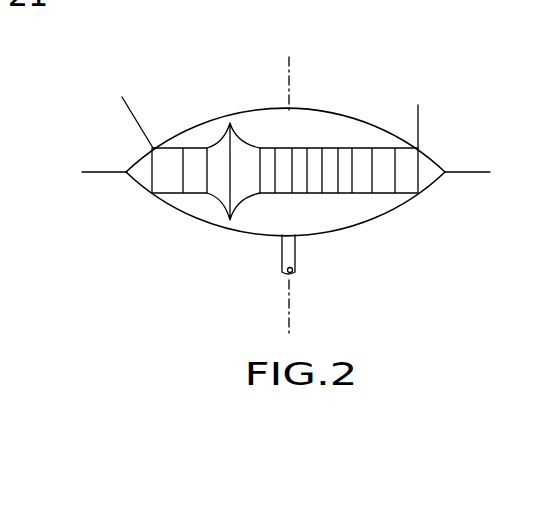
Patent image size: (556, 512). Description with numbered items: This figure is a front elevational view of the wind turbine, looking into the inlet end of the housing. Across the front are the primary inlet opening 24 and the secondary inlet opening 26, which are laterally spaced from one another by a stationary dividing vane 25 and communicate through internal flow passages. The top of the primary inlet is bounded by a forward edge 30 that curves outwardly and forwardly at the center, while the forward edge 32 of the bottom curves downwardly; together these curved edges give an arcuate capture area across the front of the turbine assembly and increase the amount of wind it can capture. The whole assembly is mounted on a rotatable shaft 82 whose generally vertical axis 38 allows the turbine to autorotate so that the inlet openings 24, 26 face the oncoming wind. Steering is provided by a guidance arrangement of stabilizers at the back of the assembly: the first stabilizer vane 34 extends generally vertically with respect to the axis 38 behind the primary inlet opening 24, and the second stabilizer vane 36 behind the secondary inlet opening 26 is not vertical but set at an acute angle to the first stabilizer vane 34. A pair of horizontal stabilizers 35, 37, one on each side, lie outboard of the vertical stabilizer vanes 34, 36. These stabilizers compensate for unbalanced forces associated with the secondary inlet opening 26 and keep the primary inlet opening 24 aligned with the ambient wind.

The primary inlet opening 24 is at (360, 177).
The stationary dividing vane 25 is at (240, 157).
The secondary inlet opening 26 is at (165, 182).
The forward edge of the primary inlet opening 30 is at (325, 108).
The forward edge of the bottom 32 is at (258, 236).
The first stabilizer vane 34 is at (418, 122).
The horizontal stabilizer 35 is at (478, 173).
The second stabilizer vane 36 is at (135, 112).
The horizontal stabilizer 37 is at (95, 173).
The vertical axis 38 is at (289, 72).
The rotatable shaft 82 is at (297, 258).